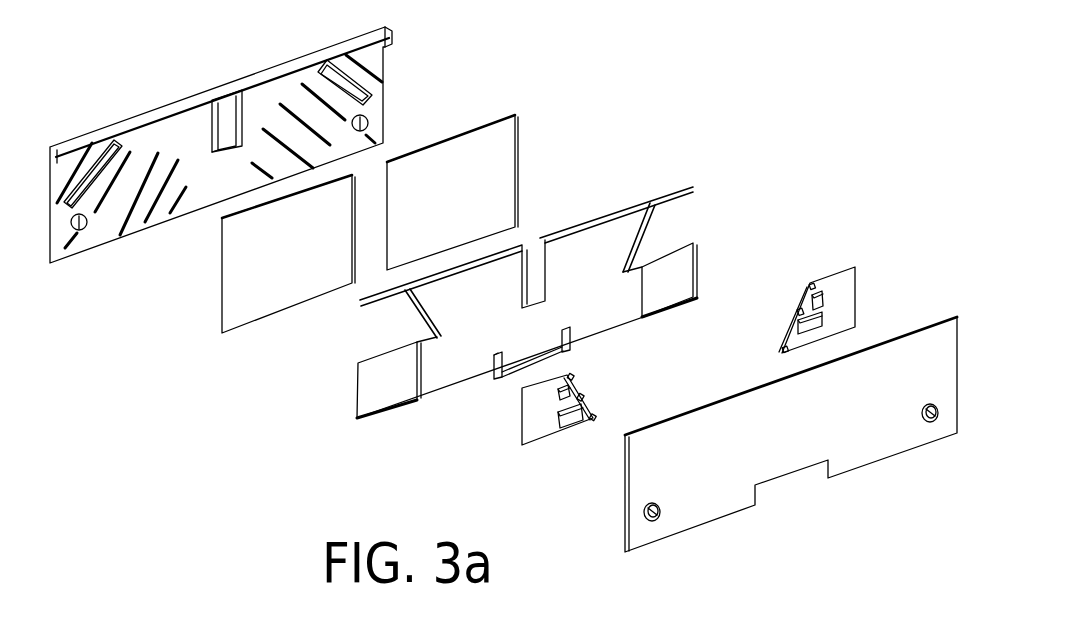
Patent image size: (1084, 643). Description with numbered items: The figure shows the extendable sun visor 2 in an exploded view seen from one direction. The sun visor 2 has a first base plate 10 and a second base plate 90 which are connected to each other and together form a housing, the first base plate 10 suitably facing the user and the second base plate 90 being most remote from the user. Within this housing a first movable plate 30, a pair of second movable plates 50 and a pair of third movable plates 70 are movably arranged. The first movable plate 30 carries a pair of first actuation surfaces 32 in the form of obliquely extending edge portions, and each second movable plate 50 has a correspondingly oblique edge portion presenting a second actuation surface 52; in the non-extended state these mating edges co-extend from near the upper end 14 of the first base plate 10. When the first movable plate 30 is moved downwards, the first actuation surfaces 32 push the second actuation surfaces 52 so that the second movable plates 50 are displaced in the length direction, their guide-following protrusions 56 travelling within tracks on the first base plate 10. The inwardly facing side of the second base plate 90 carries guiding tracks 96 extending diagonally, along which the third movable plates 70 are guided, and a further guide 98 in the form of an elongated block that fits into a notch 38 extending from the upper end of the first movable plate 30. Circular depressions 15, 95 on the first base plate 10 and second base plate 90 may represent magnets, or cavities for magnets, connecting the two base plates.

The extendable sun visor 2 is at (680, 99).
The first base plate 10 is at (795, 449).
The upper end 14 is at (686, 412).
The circular depression 15 is at (934, 422).
The first movable plate 30 is at (457, 358).
The first actuation surface 32 is at (645, 240).
The notch 38 is at (536, 279).
The second movable plate 50 is at (838, 290).
The second actuation surface 52 is at (808, 293).
The guide-following protrusion 56 is at (818, 323).
The third movable plate 70 is at (453, 195).
The second base plate 90 is at (152, 110).
The circular depression 95 is at (368, 122).
The guiding track 96 is at (325, 62).
The guide 98 is at (228, 112).